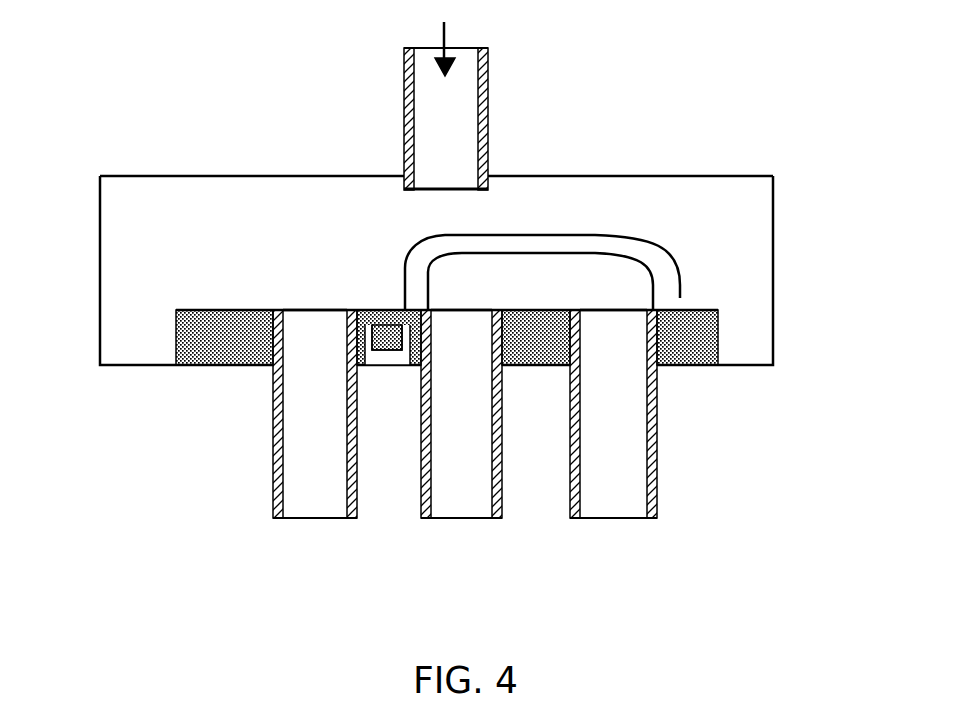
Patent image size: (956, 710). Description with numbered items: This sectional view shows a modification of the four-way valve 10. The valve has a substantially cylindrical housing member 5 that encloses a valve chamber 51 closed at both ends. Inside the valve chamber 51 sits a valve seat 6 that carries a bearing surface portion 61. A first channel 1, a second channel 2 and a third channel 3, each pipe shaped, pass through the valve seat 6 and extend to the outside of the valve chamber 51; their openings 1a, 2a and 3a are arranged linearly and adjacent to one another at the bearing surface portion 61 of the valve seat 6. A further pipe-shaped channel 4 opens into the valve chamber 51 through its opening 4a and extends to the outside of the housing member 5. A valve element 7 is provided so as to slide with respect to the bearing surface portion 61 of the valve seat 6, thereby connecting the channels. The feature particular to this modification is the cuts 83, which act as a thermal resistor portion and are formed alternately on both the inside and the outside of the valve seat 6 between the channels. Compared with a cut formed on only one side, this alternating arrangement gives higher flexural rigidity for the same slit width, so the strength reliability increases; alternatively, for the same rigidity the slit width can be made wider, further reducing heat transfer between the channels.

The four-way valve 10 is at (97, 82).
The first channel 1 is at (290, 413).
The opening of first channel 1a is at (300, 308).
The second channel 2 is at (437, 483).
The opening of second channel 2a is at (456, 307).
The third channel 3 is at (635, 466).
The opening of third channel 3a is at (617, 308).
The pipe-shaped channel 4 is at (488, 67).
The opening of pipe-shaped channel 4a is at (462, 187).
The housing member 5 is at (775, 213).
The valve chamber 51 is at (309, 203).
The valve seat 6 is at (695, 338).
The bearing surface portion 61 is at (197, 308).
The valve element 7 is at (672, 293).
The cuts 83 is at (390, 366).